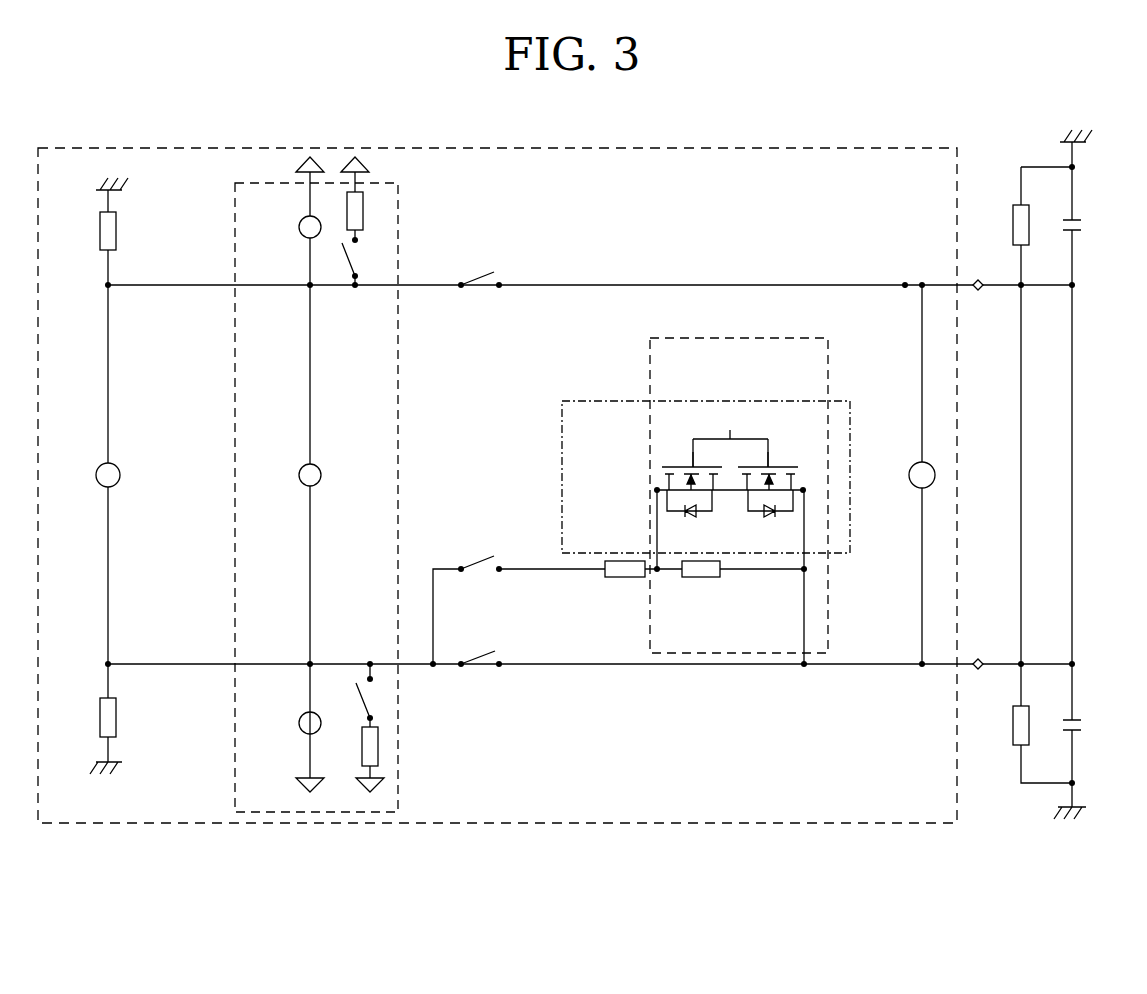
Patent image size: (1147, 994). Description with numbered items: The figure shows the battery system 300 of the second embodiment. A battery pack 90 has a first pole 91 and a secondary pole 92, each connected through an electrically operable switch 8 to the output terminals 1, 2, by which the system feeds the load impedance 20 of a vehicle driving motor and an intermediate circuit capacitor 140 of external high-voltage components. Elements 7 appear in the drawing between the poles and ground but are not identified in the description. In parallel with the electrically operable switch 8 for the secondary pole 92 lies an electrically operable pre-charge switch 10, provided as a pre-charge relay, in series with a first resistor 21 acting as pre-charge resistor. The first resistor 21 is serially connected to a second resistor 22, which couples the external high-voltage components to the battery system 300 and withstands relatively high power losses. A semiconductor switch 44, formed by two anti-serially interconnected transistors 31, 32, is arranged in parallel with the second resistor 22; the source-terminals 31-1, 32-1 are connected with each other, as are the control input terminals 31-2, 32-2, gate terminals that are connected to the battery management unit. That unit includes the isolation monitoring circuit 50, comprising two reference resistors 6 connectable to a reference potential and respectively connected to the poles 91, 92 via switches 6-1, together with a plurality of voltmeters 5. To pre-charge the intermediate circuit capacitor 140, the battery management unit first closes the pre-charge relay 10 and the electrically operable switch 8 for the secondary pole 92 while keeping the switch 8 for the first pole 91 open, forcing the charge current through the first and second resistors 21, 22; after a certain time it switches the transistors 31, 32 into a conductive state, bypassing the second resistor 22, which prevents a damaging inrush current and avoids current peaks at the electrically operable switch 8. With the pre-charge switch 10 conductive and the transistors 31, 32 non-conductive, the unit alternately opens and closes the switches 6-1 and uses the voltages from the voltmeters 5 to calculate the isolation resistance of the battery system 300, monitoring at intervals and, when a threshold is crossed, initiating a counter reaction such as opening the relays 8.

The battery system 300 is at (957, 165).
The isolation monitoring circuit 50 is at (398, 786).
The semiconductor switch 44 is at (850, 432).
The resistor 7 is at (98, 232).
The secondary pole 92 is at (106, 288).
The battery pack 90 is at (98, 466).
The first pole 91 is at (106, 662).
The voltmeters 5 is at (300, 232).
The reference resistors 6 is at (363, 216).
The switches 6-1 is at (350, 258).
The electrically operable switch 8 is at (502, 272).
The pre-charge switch 10 is at (480, 556).
The first resistor 21 is at (625, 578).
The second resistor 22 is at (700, 578).
The transistor 31 is at (690, 462).
The transistor 32 is at (770, 462).
The source-terminal 31-1 is at (724, 493).
The source-terminal 32-1 is at (734, 493).
The control input terminal 31-2 is at (690, 440).
The control input terminal 32-2 is at (770, 440).
The second output terminal 2 is at (978, 278).
The output terminal 1 is at (978, 657).
The load impedance 20 is at (1022, 450).
The intermediate circuit capacitor 140 is at (1074, 222).